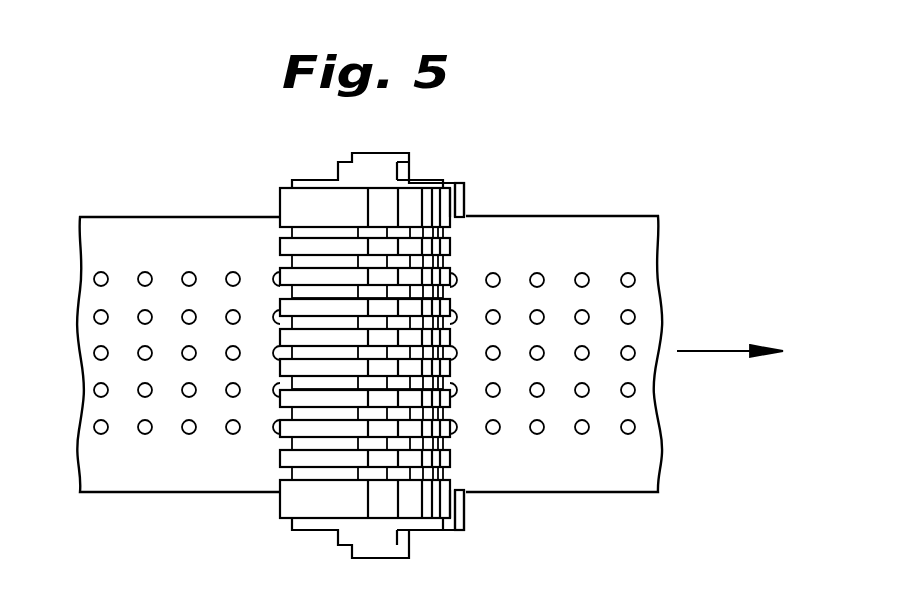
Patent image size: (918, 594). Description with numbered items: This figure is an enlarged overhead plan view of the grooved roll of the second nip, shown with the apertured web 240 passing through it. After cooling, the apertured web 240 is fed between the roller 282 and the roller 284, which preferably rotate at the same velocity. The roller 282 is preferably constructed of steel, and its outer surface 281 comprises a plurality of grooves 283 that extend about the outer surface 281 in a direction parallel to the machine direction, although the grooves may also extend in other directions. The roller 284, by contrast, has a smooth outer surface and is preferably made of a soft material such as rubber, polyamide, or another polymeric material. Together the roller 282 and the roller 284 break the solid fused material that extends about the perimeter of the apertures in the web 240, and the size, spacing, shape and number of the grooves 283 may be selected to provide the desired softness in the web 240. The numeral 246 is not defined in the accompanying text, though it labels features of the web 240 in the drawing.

The apertured web 240 is at (369, 351).
The holes 246 is at (582, 278).
The outer surface 281 is at (322, 354).
The roller 282 is at (323, 207).
The grooves 283 is at (338, 474).
The roller 284 is at (468, 193).